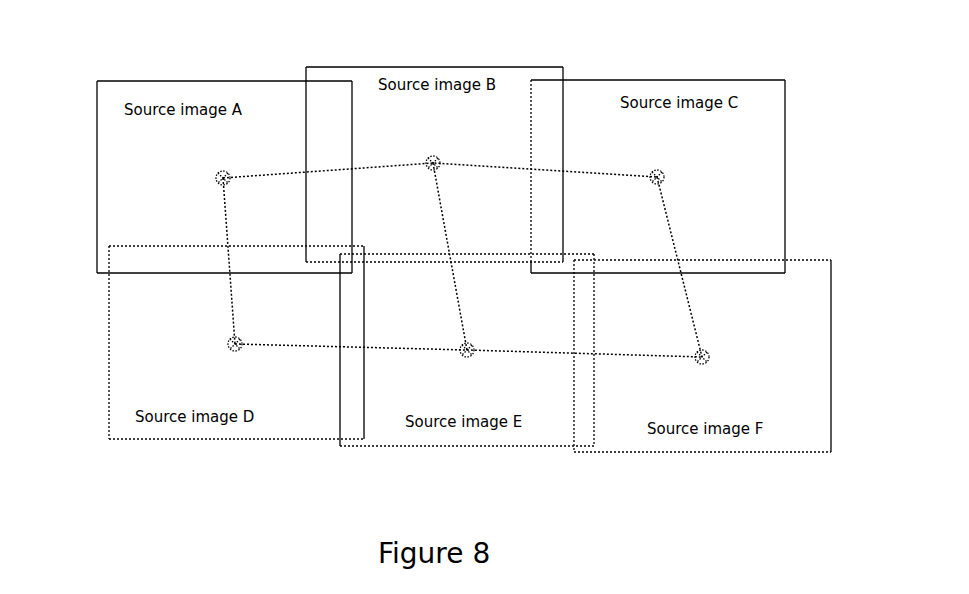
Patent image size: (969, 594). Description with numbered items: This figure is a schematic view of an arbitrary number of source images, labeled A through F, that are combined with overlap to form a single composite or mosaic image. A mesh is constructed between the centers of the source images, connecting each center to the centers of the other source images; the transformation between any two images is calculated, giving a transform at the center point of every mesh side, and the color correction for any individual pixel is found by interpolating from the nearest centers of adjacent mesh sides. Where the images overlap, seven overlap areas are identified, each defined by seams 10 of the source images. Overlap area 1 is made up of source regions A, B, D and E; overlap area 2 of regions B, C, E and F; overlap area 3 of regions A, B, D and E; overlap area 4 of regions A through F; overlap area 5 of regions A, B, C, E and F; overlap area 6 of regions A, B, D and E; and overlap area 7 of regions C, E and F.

The overlap area 1 is at (337, 214).
The overlap area 2 is at (553, 153).
The overlap area 3 is at (166, 277).
The overlap area 4 is at (466, 243).
The overlap area 5 is at (748, 282).
The overlap area 6 is at (359, 338).
The overlap area 7 is at (589, 421).
The seams 10 is at (337, 66).